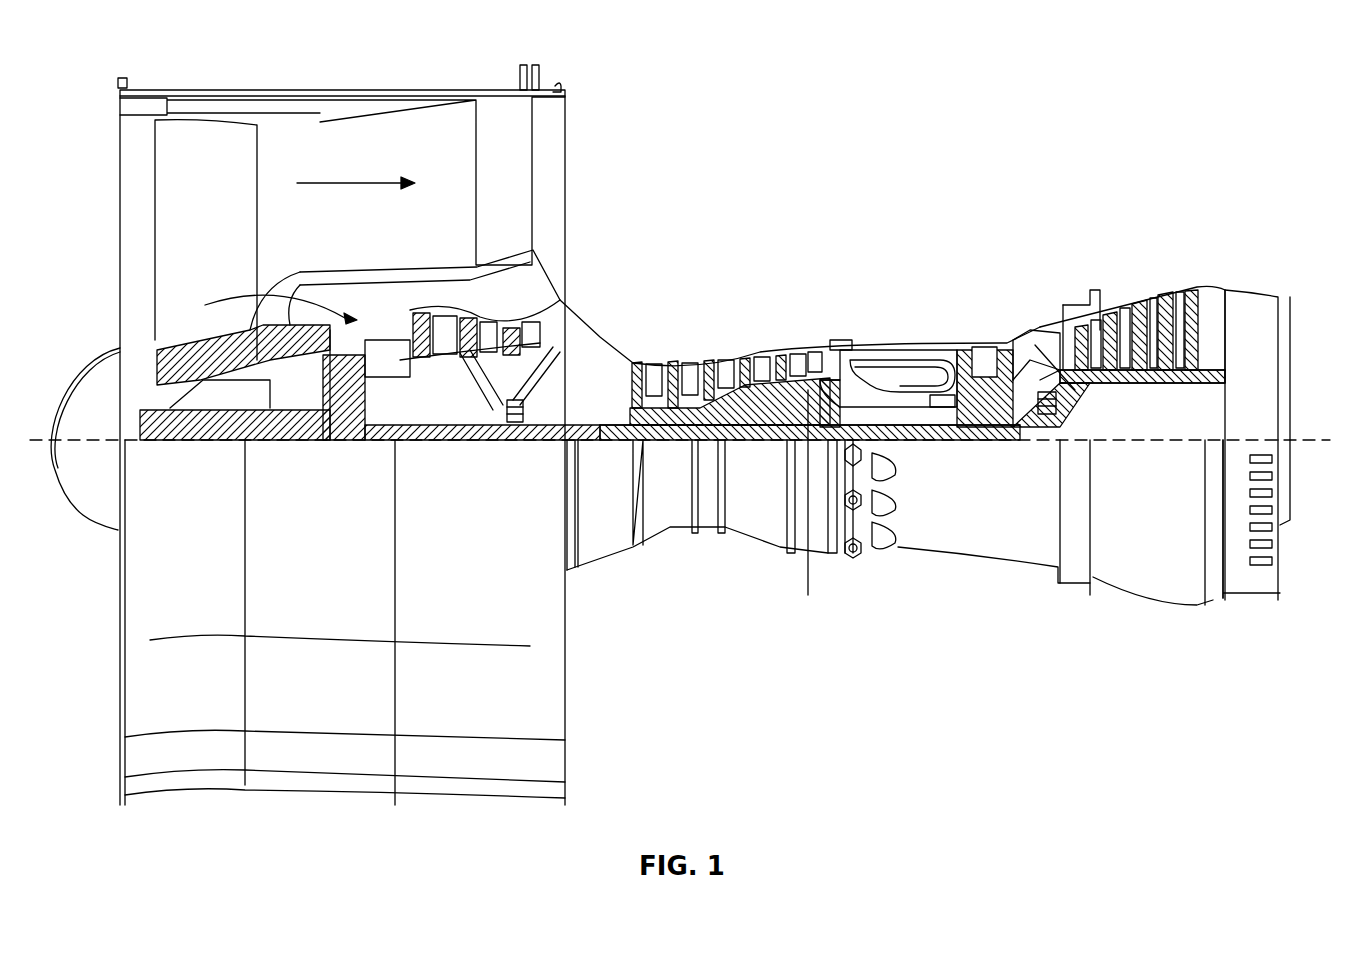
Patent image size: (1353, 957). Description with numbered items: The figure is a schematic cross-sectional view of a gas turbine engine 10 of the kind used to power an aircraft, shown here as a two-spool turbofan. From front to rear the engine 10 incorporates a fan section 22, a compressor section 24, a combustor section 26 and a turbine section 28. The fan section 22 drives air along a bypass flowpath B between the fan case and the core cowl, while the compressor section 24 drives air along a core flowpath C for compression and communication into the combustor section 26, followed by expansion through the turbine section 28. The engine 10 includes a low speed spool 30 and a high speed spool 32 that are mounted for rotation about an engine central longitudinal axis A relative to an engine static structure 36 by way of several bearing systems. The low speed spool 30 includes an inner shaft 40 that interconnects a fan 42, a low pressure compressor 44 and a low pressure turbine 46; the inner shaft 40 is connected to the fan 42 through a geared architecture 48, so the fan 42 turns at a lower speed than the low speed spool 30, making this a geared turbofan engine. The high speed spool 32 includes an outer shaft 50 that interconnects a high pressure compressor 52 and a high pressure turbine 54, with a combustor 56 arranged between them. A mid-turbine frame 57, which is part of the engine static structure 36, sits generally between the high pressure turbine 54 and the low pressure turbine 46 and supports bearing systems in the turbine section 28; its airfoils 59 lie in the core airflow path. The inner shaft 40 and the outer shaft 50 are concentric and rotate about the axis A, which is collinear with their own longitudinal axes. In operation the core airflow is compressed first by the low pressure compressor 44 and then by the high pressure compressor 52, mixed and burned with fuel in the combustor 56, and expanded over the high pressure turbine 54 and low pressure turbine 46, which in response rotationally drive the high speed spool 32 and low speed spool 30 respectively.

The gas turbine engine 10 is at (680, 432).
The fan section 22 is at (270, 88).
The compressor section 24 is at (590, 434).
The combustor section 26 is at (916, 331).
The turbine section 28 is at (1149, 425).
The low speed spool 30 is at (767, 442).
The high speed spool 32 is at (832, 360).
The engine static structure 36 is at (808, 553).
The inner shaft 40 is at (552, 434).
The fan 42 is at (223, 213).
The low pressure compressor 44 is at (487, 312).
The low pressure turbine 46 is at (1138, 306).
The geared architecture 48 is at (352, 422).
The outer shaft 50 is at (930, 427).
The high pressure compressor 52 is at (718, 362).
The high pressure turbine 54 is at (985, 346).
The combustor 56 is at (918, 360).
The mid-turbine frame 57 is at (1028, 338).
The airfoils 59 is at (1050, 372).
The engine central longitudinal axis A is at (1325, 438).
The bypass flowpath B is at (356, 183).
The core flowpath C is at (268, 295).